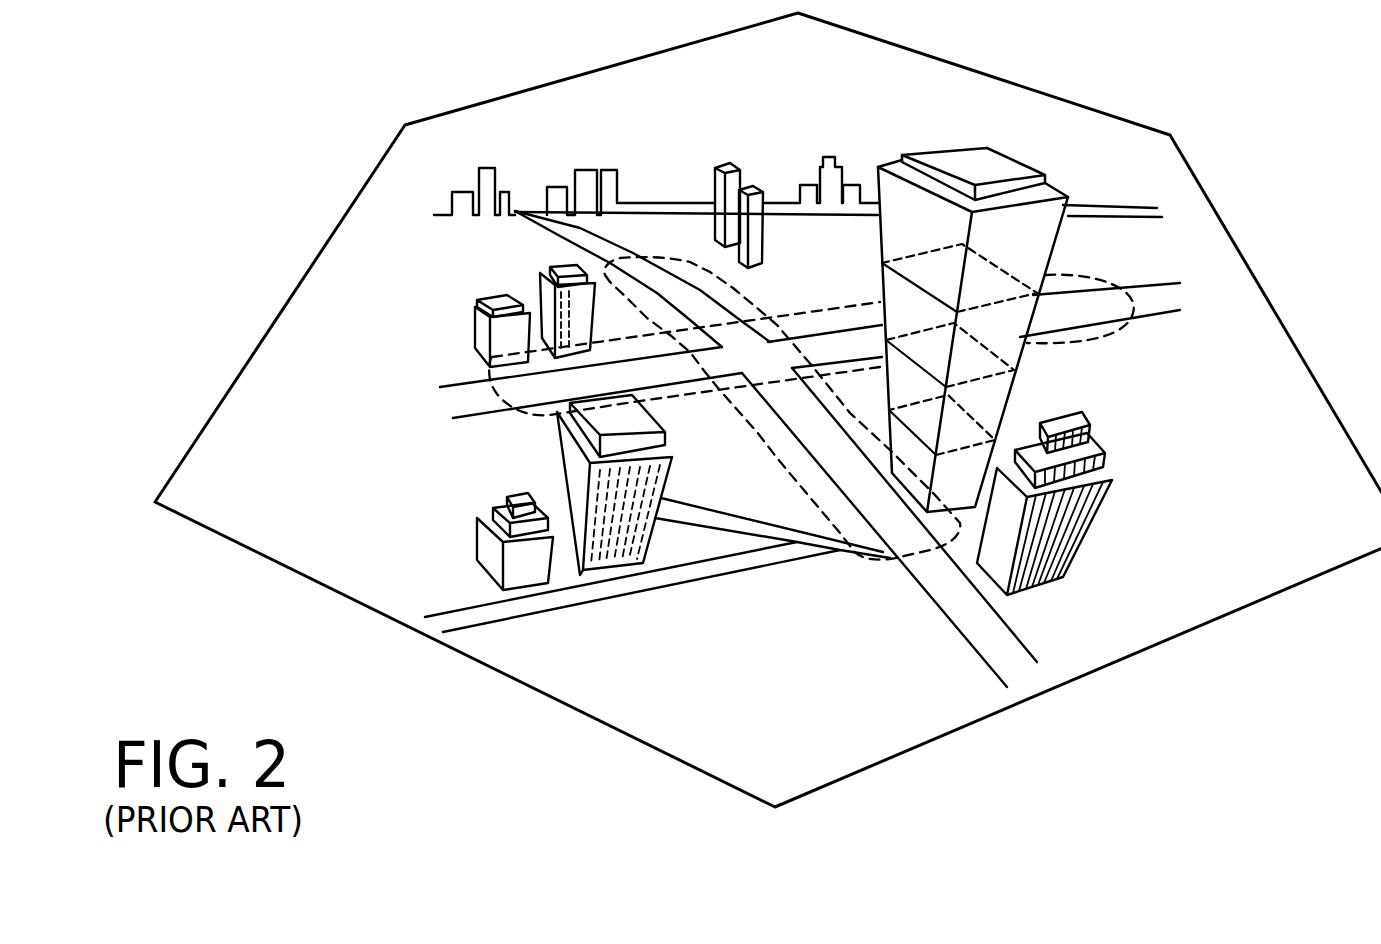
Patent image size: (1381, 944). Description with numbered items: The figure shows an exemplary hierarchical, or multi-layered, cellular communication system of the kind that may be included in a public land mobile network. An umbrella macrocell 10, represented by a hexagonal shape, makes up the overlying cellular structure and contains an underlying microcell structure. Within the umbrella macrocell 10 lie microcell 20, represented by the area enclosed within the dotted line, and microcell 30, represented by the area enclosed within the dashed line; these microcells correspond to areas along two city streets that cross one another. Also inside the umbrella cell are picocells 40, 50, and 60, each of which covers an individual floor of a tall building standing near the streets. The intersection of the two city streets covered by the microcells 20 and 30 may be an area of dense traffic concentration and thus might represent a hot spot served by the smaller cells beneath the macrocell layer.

The umbrella macrocell 10 is at (420, 632).
The microcell 20 is at (663, 257).
The microcell 30 is at (505, 387).
The picocell 40 is at (1032, 287).
The picocell 50 is at (993, 355).
The picocell 60 is at (948, 445).